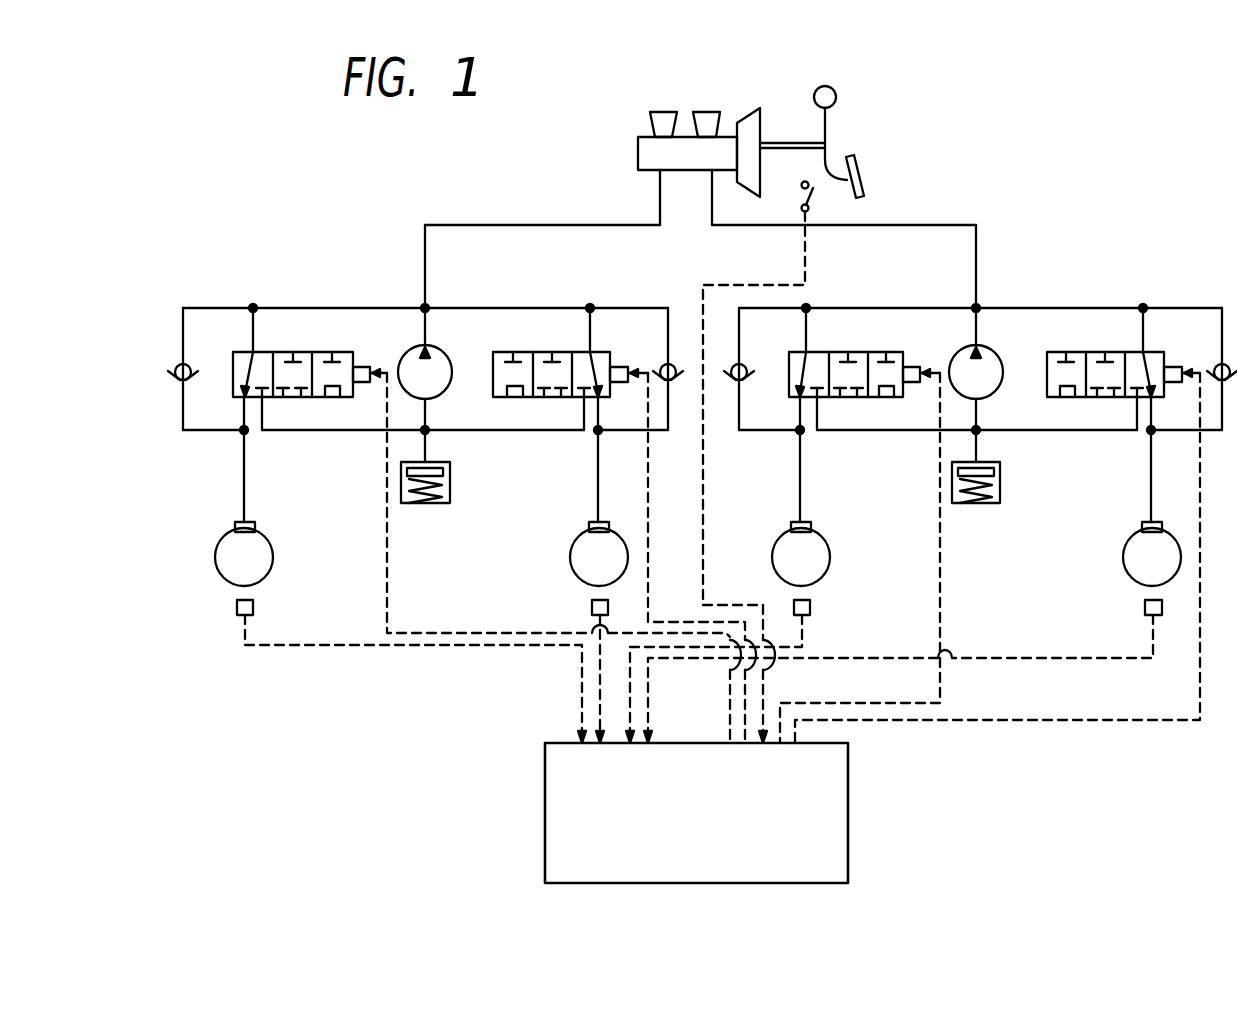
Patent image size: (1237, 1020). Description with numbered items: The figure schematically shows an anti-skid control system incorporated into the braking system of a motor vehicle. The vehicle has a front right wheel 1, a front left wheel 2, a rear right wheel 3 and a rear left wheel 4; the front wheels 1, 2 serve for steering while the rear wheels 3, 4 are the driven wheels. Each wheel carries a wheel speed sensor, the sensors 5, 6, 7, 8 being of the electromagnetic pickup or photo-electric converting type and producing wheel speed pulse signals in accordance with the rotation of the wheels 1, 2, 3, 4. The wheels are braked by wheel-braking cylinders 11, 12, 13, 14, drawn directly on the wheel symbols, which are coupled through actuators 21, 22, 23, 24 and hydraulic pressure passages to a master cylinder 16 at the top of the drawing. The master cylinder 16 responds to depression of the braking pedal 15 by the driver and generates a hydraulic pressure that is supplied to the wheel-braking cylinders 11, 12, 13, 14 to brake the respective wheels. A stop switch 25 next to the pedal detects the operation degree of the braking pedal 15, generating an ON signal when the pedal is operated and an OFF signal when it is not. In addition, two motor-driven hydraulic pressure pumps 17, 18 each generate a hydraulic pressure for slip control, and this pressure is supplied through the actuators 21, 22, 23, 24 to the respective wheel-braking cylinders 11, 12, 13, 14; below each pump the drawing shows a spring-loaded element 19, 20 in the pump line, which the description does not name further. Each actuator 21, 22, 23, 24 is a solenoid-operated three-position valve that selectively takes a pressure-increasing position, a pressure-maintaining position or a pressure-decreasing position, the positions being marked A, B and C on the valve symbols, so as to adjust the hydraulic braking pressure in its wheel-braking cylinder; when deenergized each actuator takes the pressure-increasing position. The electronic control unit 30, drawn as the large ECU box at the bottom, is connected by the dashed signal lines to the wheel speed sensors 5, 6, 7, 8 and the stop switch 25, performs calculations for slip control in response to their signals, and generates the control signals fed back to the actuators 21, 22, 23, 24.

The front right wheel 1 is at (214, 549).
The front left wheel 2 is at (569, 549).
The rear right wheel 3 is at (776, 549).
The rear left wheel 4 is at (1124, 549).
The wheel speed sensor 5 is at (255, 606).
The wheel speed sensor 6 is at (591, 606).
The wheel speed sensor 7 is at (812, 606).
The wheel speed sensor 8 is at (1147, 606).
The wheel-braking cylinder 11 is at (257, 522).
The wheel-braking cylinder 12 is at (610, 522).
The wheel-braking cylinder 13 is at (812, 522).
The wheel-braking cylinder 14 is at (1163, 522).
The braking pedal 15 is at (856, 150).
The master cylinder 16 is at (636, 150).
The hydraulic pressure pump 17 is at (450, 360).
The hydraulic pressure pump 18 is at (1000, 360).
The accumulator 19 is at (452, 472).
The accumulator 20 is at (1001, 472).
The actuator 21 is at (352, 354).
The actuator 22 is at (607, 354).
The actuator 23 is at (885, 354).
The actuator 24 is at (1160, 354).
The stop switch 25 is at (812, 193).
The electronic control unit 30 is at (850, 758).